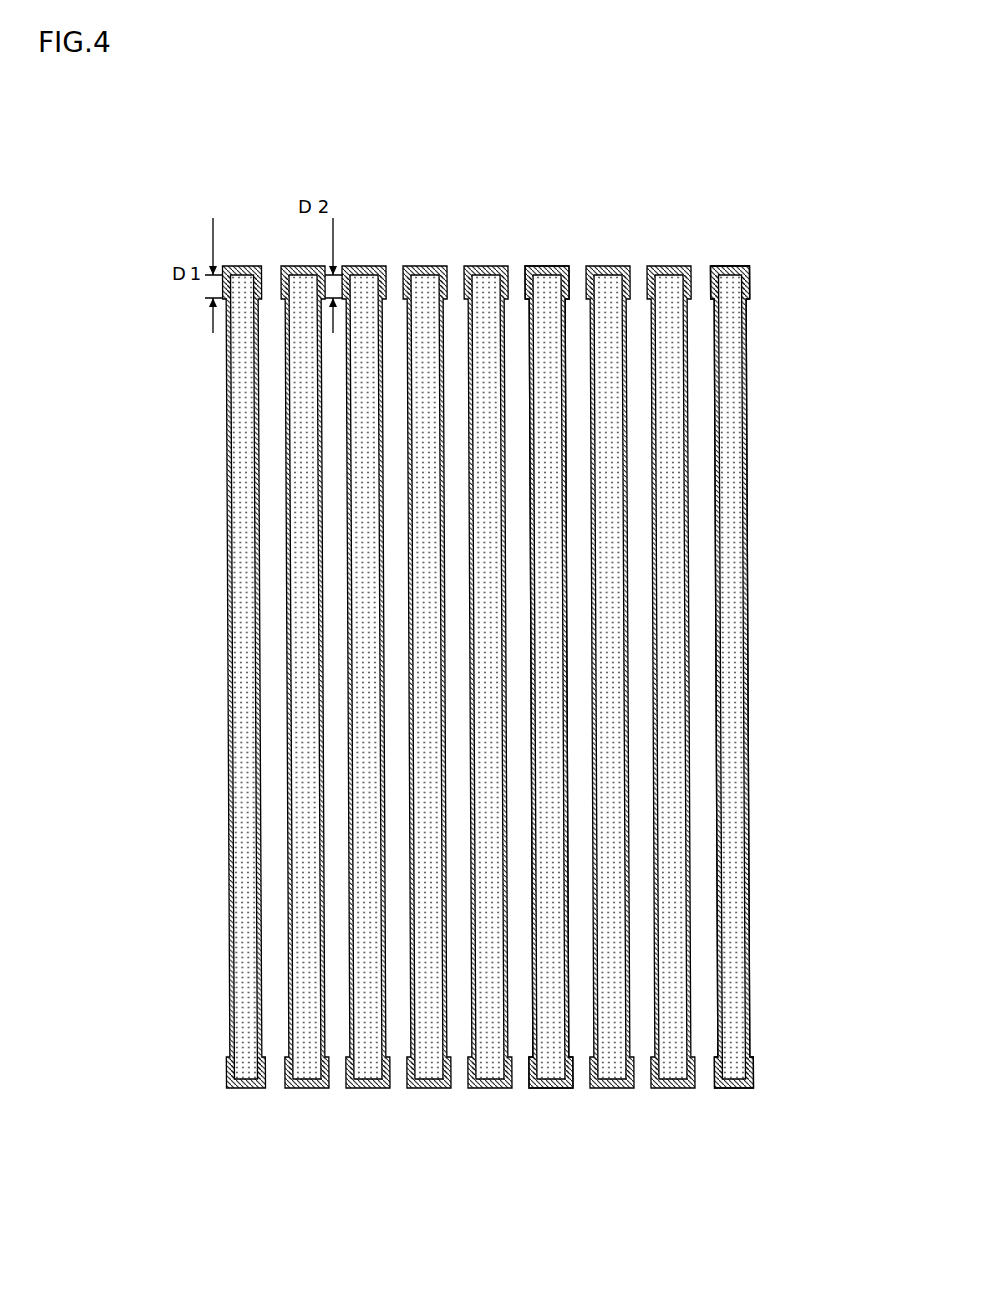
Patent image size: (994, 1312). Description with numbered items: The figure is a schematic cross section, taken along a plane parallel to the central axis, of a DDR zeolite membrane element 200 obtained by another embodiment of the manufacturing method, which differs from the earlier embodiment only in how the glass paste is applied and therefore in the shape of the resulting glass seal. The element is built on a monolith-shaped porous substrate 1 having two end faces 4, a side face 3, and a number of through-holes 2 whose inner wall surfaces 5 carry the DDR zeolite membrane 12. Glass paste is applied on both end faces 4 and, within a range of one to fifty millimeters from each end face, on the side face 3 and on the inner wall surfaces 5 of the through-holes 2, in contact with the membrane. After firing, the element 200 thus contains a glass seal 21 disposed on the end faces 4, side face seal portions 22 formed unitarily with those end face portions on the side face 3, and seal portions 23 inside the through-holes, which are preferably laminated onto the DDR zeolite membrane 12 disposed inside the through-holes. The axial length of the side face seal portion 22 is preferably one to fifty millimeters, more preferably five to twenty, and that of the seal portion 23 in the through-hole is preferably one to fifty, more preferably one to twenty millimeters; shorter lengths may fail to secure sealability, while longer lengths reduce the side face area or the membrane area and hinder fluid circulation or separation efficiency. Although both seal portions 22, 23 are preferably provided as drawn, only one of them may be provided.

The DDR zeolite membrane element 200 is at (908, 166).
The porous substrate 1 is at (758, 436).
The through-holes 2 is at (638, 300).
The side face 3 is at (747, 651).
The end face 4 is at (675, 266).
The inner wall surface of through-hole 5 is at (571, 367).
The DDR zeolite membrane 12 is at (527, 355).
The glass seal 21 is at (491, 256).
The side face seal portion 22 is at (748, 283).
The seal portion in through-hole 23 is at (389, 285).